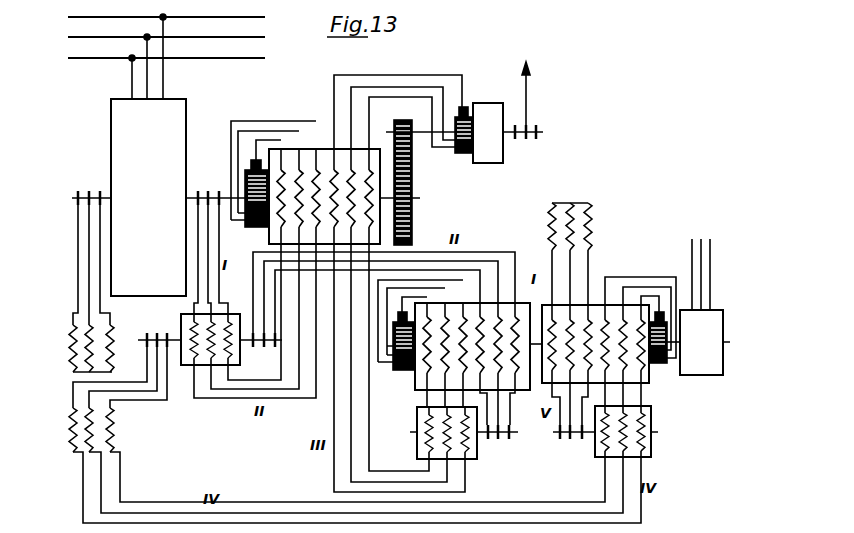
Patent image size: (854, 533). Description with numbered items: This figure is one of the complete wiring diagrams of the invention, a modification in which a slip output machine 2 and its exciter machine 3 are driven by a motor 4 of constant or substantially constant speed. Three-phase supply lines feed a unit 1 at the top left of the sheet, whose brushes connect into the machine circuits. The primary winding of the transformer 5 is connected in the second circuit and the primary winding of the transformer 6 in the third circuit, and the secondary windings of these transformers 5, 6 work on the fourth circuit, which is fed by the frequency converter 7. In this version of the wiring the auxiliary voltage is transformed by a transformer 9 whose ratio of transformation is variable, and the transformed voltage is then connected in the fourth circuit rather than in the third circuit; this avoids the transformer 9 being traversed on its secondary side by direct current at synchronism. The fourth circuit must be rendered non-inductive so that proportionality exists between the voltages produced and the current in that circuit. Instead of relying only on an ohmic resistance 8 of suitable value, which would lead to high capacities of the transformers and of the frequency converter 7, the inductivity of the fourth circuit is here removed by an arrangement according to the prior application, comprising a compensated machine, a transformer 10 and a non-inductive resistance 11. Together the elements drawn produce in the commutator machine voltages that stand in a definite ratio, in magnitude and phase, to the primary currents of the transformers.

The mains-fed converter 1 is at (177, 114).
The slip output machine 2 is at (271, 233).
The exciter machine 3 is at (416, 375).
The motor 4 is at (710, 371).
The transformer 5 is at (182, 319).
The transformer 6 is at (417, 413).
The frequency converter 7 is at (483, 112).
The non-inductive resistance 8 is at (647, 380).
The transformer 9 is at (103, 378).
The transformer 10 is at (588, 235).
The non-inductive resistance 11 is at (597, 455).